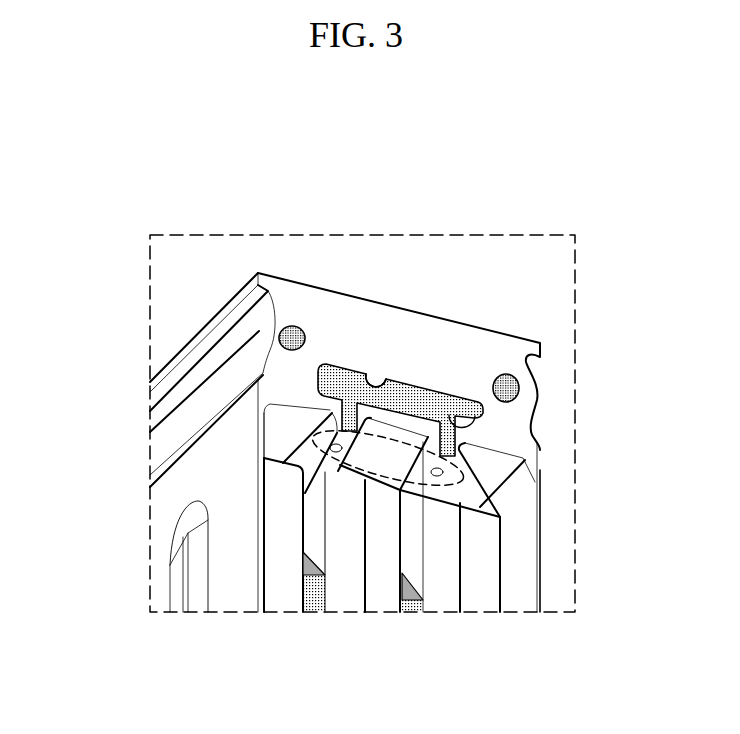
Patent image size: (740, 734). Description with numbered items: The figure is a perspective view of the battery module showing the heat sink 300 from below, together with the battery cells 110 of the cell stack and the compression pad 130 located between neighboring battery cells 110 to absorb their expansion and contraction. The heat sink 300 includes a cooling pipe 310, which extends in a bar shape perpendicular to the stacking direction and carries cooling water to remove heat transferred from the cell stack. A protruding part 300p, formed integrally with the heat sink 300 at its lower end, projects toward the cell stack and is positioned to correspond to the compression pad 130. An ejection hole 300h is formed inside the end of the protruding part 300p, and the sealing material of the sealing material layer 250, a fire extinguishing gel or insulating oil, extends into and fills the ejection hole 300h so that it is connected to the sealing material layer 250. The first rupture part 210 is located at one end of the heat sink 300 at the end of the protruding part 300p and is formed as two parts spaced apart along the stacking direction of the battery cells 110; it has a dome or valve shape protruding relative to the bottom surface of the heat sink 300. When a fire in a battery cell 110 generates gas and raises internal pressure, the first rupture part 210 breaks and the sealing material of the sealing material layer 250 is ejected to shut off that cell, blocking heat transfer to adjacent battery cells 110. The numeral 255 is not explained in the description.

The heat sink 300 is at (332, 316).
The cooling pipe 310 is at (292, 338).
The sealing material layer 250 is at (423, 407).
The notch 255 is at (371, 383).
The ejection hole 300h is at (478, 410).
The protruding part 300p is at (316, 442).
The first rupture part 210 is at (367, 468).
The battery cell 110 is at (380, 602).
The compression pad 130 is at (410, 602).